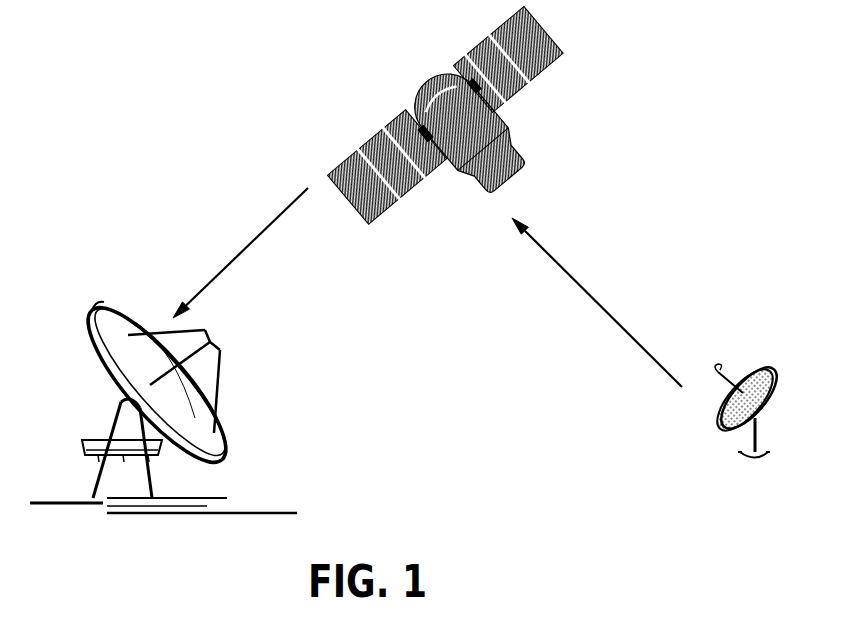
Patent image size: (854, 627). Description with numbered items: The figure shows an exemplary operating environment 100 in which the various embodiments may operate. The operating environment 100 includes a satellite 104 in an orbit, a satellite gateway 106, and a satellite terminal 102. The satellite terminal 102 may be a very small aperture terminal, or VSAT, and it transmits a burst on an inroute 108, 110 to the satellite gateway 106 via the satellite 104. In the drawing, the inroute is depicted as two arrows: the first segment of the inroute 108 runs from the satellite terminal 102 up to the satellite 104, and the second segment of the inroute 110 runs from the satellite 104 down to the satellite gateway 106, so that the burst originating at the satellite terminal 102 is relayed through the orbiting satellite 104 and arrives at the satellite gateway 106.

The operating environment 100 is at (172, 30).
The satellite terminal 102 is at (753, 462).
The satellite 104 is at (513, 142).
The satellite gateway 106 is at (103, 503).
The inroute 108 is at (595, 297).
The inroute 110 is at (252, 240).